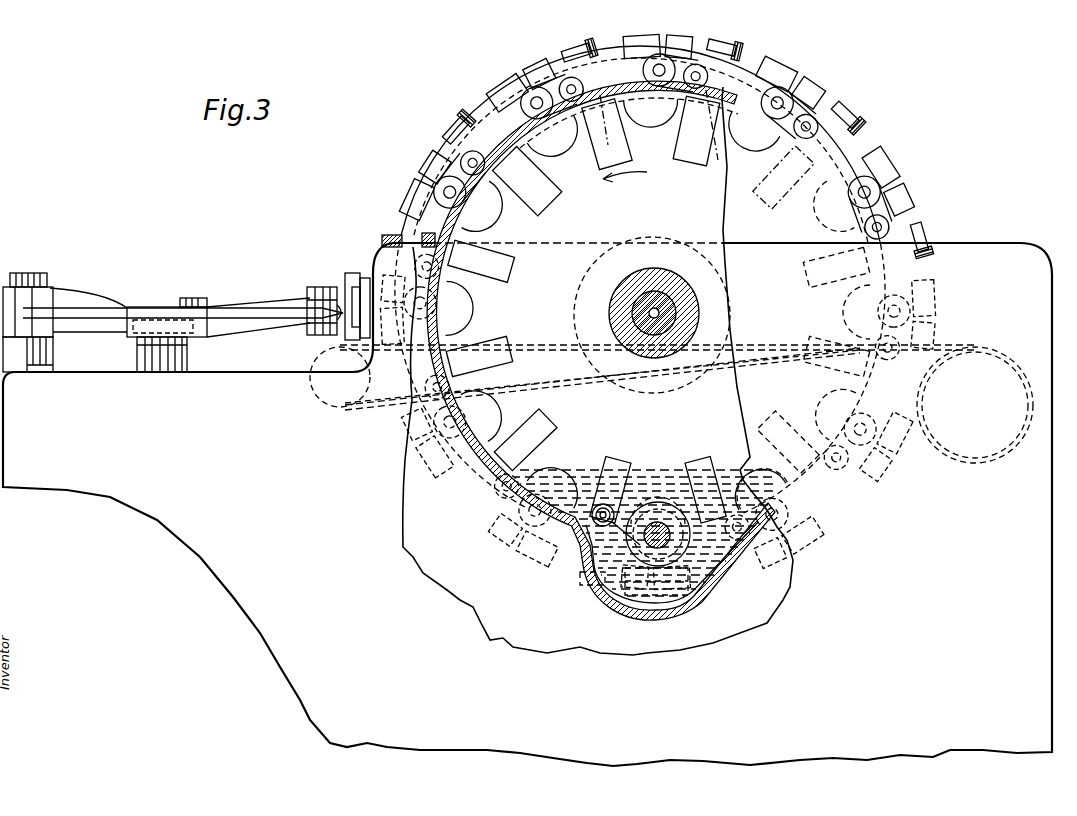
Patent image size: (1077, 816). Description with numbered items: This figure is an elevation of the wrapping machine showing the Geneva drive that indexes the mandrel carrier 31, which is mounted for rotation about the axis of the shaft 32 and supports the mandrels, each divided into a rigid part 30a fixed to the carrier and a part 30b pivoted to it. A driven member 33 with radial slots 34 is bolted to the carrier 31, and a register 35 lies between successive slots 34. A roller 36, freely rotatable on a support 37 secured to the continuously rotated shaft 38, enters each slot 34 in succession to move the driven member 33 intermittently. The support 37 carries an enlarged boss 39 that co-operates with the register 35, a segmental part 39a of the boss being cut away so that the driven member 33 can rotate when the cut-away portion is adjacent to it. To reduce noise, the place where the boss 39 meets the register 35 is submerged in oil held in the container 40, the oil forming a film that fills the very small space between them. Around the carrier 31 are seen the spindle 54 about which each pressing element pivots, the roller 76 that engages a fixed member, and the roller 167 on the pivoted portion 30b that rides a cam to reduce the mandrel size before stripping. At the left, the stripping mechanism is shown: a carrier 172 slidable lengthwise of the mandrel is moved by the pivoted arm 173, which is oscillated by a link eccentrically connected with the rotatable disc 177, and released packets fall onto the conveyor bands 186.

The rigid mandrel part 30a is at (495, 80).
The pivoted mandrel part 30b is at (528, 62).
The roller 76 is at (547, 88).
The roller 167 is at (580, 44).
The spindle 54 is at (438, 191).
The carrier 31 is at (857, 147).
The shaft 32 is at (634, 281).
The conveyor bands 186 is at (541, 340).
The register 35 is at (497, 414).
The radial slots 34 is at (533, 421).
The roller 36 is at (603, 455).
The support 37 is at (640, 505).
The shaft 38 is at (673, 500).
The enlarged boss 39 is at (662, 502).
The segmental cut-away part 39a is at (657, 521).
The driven member 33 is at (470, 482).
The container 40 is at (704, 603).
The rotatable disc 177 is at (157, 318).
The arm 173 is at (249, 307).
The carrier 172 is at (350, 306).